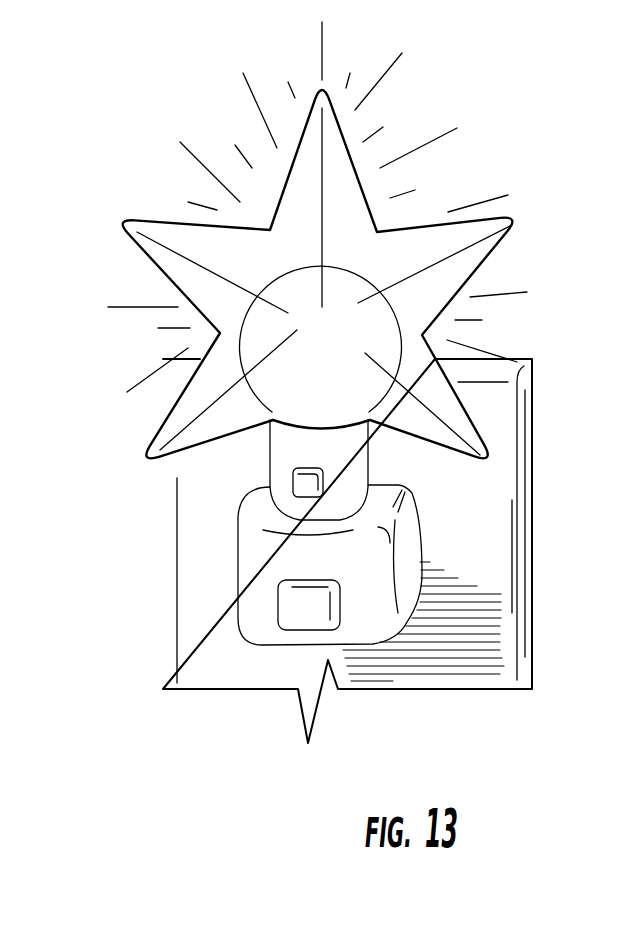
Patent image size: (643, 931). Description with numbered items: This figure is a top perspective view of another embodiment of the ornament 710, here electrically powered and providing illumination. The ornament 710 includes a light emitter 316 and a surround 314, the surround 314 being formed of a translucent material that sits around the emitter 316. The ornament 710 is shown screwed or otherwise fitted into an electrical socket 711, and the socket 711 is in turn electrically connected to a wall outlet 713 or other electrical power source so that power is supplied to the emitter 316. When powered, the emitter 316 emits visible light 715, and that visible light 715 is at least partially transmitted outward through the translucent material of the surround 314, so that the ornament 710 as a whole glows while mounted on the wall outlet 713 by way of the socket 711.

The ornament 710 is at (435, 224).
The visible light 715 is at (255, 108).
The surround 314 is at (505, 258).
The light emitter 316 is at (283, 455).
The electrical socket 711 is at (403, 522).
The wall outlet 713 is at (523, 442).